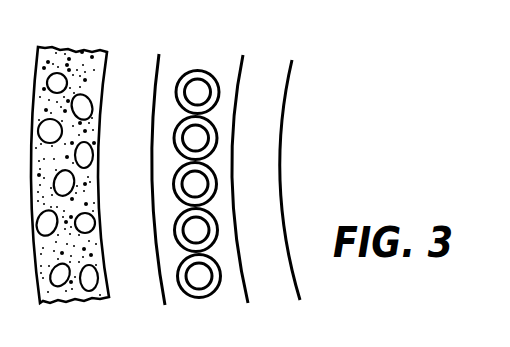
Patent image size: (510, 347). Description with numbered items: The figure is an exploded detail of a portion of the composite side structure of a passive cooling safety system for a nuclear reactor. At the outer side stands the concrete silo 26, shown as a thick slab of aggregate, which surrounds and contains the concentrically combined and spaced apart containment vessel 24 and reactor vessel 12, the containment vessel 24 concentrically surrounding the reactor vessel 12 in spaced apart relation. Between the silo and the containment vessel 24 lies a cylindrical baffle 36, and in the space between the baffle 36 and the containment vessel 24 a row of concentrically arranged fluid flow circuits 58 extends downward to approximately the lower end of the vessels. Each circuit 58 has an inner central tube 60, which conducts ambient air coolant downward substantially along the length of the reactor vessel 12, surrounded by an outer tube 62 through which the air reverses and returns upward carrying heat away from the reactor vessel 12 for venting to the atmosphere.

The reactor vessel 12 is at (283, 128).
The containment vessel 24 is at (233, 190).
The concrete silo 26 is at (105, 238).
The cylindrical baffle 36 is at (150, 172).
The fluid flow circuit 58 is at (207, 70).
The inner central tube 60 is at (190, 92).
The outer tube 62 is at (192, 77).